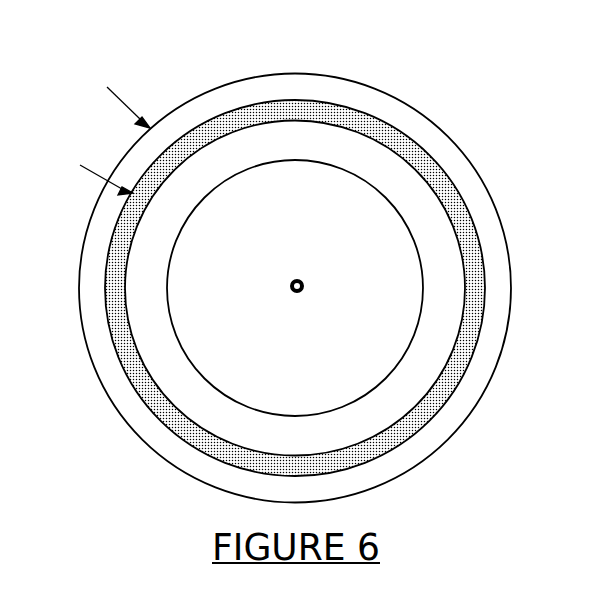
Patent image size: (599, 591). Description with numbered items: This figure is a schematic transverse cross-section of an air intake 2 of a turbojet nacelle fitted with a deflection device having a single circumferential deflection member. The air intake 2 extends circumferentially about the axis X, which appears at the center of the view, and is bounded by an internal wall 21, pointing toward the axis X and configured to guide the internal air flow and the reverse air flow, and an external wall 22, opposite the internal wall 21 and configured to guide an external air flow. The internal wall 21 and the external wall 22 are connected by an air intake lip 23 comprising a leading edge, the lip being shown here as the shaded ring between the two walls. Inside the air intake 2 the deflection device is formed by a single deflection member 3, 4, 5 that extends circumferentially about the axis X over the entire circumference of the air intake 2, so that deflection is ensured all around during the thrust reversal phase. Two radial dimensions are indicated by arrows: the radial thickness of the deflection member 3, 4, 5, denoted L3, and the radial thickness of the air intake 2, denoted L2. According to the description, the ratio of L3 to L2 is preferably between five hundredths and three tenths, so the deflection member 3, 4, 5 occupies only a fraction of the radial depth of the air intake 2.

The air intake 2 is at (295, 258).
The deflection member 3 is at (218, 125).
The deflection member 4 is at (172, 41).
The deflection member 5 is at (192, 41).
The internal wall 21 is at (424, 304).
The external wall 22 is at (411, 106).
The air intake lip 23 is at (295, 252).
The axis X is at (295, 303).
The radial thickness of the air intake L2 is at (207, 188).
The radial thickness of the deflection member L3 is at (146, 201).